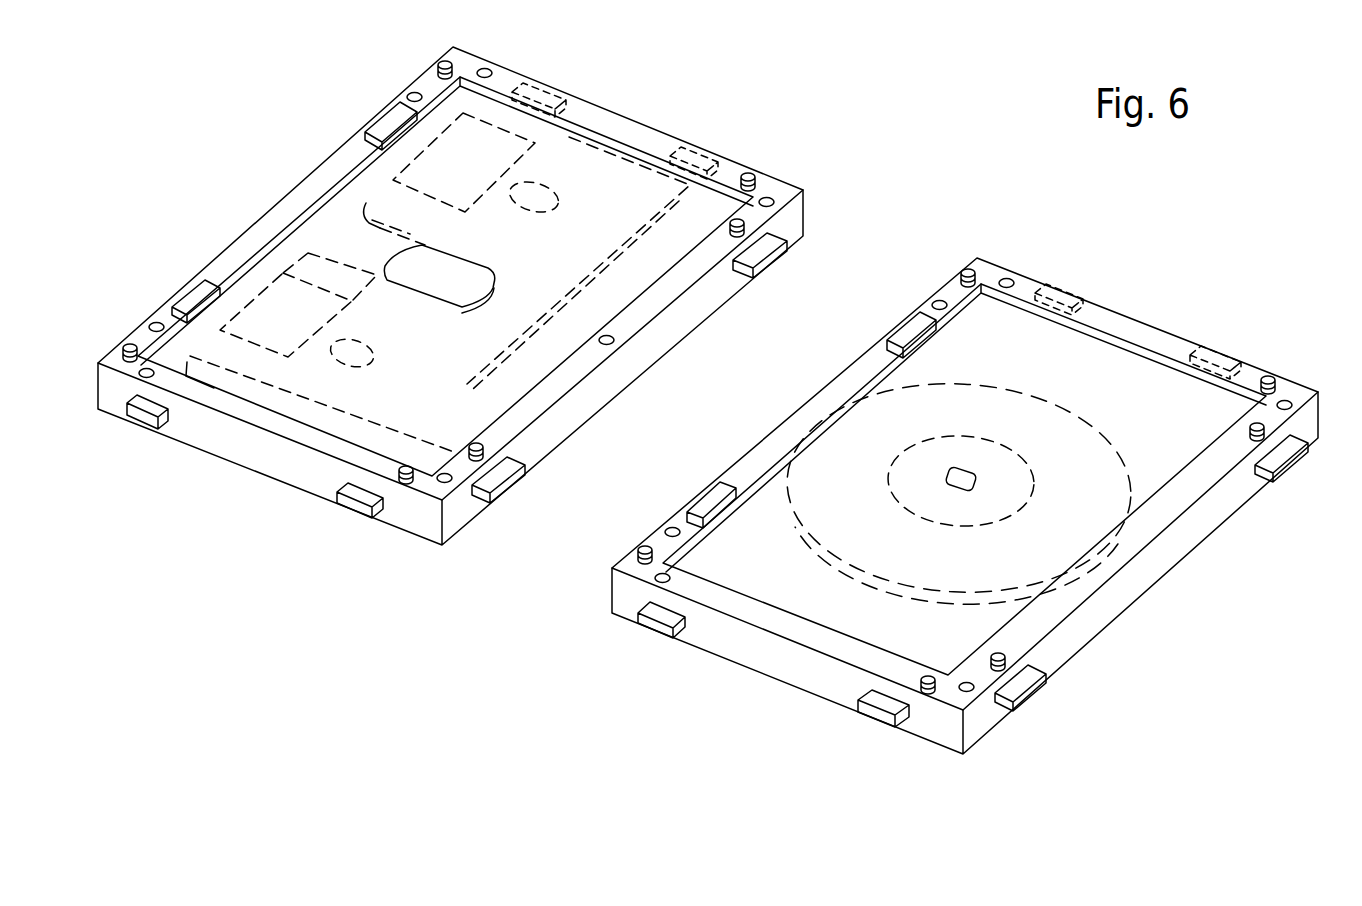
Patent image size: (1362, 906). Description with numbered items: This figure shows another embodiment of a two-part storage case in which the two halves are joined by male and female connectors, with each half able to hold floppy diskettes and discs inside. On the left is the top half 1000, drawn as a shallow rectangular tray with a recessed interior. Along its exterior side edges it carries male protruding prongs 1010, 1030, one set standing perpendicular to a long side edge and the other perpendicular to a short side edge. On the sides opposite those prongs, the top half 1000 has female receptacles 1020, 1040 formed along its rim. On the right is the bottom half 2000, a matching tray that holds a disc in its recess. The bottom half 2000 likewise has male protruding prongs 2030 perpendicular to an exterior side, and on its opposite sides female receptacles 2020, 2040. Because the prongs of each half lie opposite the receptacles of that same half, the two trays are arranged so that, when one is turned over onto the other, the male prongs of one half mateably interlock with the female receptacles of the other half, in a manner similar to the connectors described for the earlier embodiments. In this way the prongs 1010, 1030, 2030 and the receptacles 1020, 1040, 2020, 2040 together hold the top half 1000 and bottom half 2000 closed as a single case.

The top half 1000 is at (627, 130).
The male protruding prong 1010 is at (773, 250).
The female receptacle 1020 is at (383, 127).
The male protruding prong 1030 is at (143, 417).
The female receptacle 1040 is at (535, 90).
The bottom half 2000 is at (1145, 330).
The female receptacle 2020 is at (898, 332).
The male protruding prong 2030 is at (658, 625).
The female receptacle 2040 is at (1067, 293).